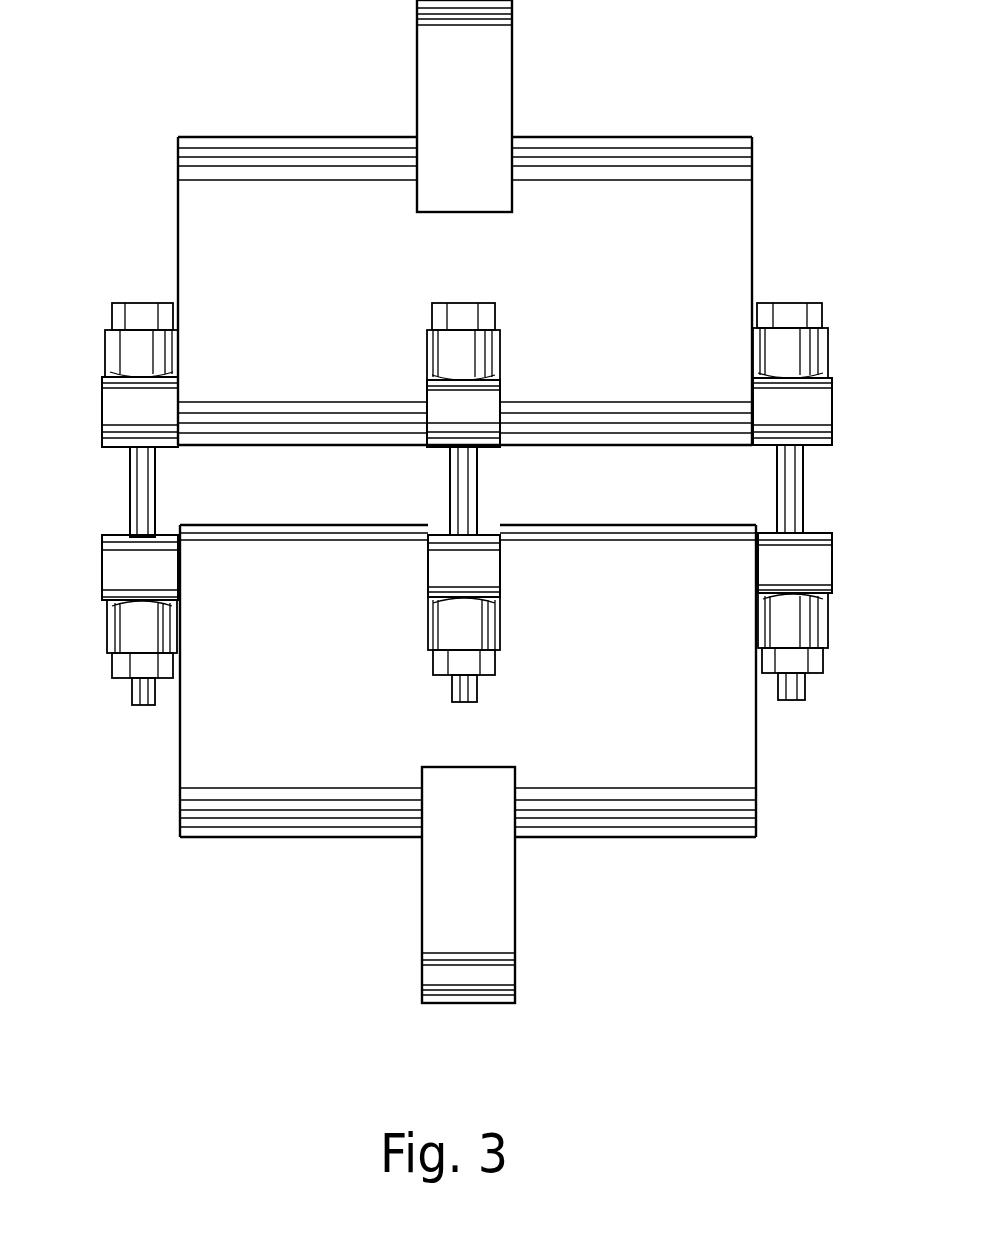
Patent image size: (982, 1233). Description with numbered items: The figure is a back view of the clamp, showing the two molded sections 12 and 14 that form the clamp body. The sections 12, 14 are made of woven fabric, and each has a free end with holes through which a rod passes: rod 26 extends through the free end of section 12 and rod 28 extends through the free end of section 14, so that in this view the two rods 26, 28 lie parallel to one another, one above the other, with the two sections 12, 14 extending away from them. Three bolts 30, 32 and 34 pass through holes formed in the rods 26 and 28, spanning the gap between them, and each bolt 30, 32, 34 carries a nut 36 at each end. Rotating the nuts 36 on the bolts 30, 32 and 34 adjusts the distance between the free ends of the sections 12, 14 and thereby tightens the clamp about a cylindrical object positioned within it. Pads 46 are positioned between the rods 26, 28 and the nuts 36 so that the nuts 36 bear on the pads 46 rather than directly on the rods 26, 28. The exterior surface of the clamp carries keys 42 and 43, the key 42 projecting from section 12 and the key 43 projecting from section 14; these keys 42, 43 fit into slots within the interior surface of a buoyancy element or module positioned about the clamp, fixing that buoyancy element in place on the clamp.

The molded section 12 is at (740, 251).
The molded section 14 is at (747, 773).
The rod 26 is at (112, 400).
The rod 28 is at (112, 580).
The bolt 30 is at (155, 513).
The bolt 32 is at (477, 468).
The bolt 34 is at (805, 510).
The nut 36 is at (147, 316).
The key 42 is at (493, 93).
The key 43 is at (492, 908).
The pad 46 is at (180, 362).